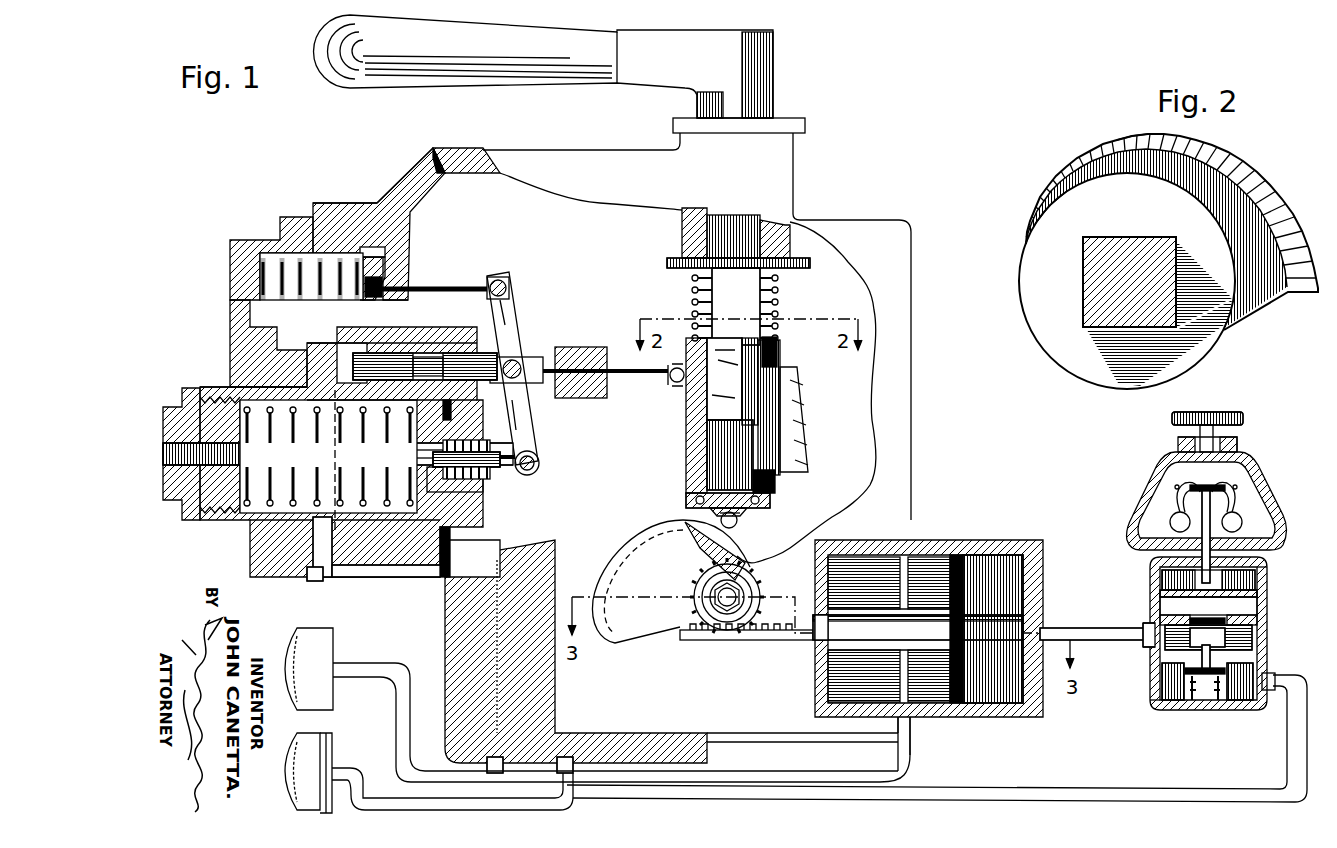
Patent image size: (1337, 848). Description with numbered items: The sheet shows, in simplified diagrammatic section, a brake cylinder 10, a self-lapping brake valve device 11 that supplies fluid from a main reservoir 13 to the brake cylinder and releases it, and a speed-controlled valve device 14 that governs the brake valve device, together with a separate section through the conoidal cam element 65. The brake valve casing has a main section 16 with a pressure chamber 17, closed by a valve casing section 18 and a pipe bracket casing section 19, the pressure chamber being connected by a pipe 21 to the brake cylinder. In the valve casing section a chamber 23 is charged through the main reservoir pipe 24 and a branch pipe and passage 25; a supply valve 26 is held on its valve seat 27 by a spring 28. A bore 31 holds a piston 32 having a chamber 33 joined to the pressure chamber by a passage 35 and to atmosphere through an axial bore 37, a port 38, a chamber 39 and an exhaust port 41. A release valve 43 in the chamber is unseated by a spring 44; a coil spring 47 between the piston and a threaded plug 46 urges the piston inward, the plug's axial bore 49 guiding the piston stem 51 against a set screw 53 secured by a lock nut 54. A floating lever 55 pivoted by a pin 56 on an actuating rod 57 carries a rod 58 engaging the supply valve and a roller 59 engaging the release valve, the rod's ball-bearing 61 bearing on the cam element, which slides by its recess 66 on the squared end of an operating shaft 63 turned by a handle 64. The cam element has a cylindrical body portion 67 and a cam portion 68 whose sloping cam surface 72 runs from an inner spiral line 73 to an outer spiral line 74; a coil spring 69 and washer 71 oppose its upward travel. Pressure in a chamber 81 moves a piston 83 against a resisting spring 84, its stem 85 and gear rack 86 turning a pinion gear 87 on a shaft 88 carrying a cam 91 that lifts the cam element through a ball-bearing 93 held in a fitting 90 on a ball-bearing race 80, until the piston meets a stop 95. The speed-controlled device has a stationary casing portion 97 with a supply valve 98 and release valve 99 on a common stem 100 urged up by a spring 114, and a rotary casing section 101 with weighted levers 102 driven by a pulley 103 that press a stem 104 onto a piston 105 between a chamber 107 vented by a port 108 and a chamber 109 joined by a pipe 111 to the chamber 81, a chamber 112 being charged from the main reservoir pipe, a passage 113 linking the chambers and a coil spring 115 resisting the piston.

In FIG. 1, the brake cylinder 10 is at (335, 742).
In FIG. 1, the self-lapping brake valve device 11 is at (318, 198).
In FIG. 1, the main reservoir 13 is at (336, 694).
In FIG. 1, the speed-controlled valve device 14 is at (1150, 468).
In FIG. 1, the main casing section 16 is at (465, 155).
In FIG. 1, the pressure chamber 17 is at (442, 188).
In FIG. 1, the valve casing section 18 is at (392, 193).
In FIG. 1, the pipe bracket casing section 19 is at (455, 748).
In FIG. 1, the pipe 21 is at (575, 802).
In FIG. 1, the chamber 23 is at (392, 258).
In FIG. 1, the main reservoir pipe 24 is at (373, 668).
In FIG. 1, the branch pipe and passage 25 is at (355, 567).
In FIG. 1, the supply valve 26 is at (398, 315).
In FIG. 1, the valve seat 27 is at (395, 298).
In FIG. 1, the spring 28 is at (262, 278).
In FIG. 1, the bore 31 is at (372, 522).
In FIG. 1, the piston 32 is at (455, 415).
In FIG. 1, the chamber 33 is at (445, 490).
In FIG. 1, the port or passage 35 is at (462, 432).
In FIG. 1, the axial bore 37 is at (447, 469).
In FIG. 1, the port 38 is at (392, 371).
In FIG. 1, the chamber 39 is at (276, 405).
In FIG. 1, the exhaust port or passage 41 is at (309, 575).
In FIG. 1, the release valve 43 is at (508, 462).
In FIG. 1, the spring 44 is at (487, 472).
In FIG. 1, the threaded plug 46 is at (222, 500).
In FIG. 1, the coil spring 47 is at (268, 505).
In FIG. 1, the axial bore 49 is at (233, 395).
In FIG. 1, the stem 51 is at (290, 505).
In FIG. 1, the set screw 53 is at (178, 405).
In FIG. 1, the lock nut 54 is at (185, 507).
In FIG. 1, the floating lever 55 is at (520, 318).
In FIG. 1, the pin 56 is at (522, 360).
In FIG. 1, the actuating rod or stem 57 is at (482, 353).
In FIG. 1, the rod or stem 58 is at (427, 285).
In FIG. 1, the roller 59 is at (539, 455).
In FIG. 1, the ball-bearing 61 is at (670, 384).
In FIG. 1, the operating shaft 63 is at (705, 120).
In FIG. 2, the operating shaft 63 is at (1086, 322).
In FIG. 1, the operating handle 64 is at (352, 62).
In FIG. 1, the conoidal cam element 65 is at (778, 355).
In FIG. 2, the conoidal cam element 65 is at (1012, 290).
In FIG. 1, the recess 66 is at (705, 460).
In FIG. 1, the cylindrical body portion 67 is at (690, 437).
In FIG. 1, the cam portion 68 is at (790, 472).
In FIG. 1, the coil spring 69 is at (778, 291).
In FIG. 1, the washer 71 is at (810, 265).
In FIG. 1, the sloping cam surface 72 is at (800, 420).
In FIG. 2, the sloping cam surface 72 is at (1252, 180).
In FIG. 2, the upper inner spiral line 73 is at (1085, 163).
In FIG. 2, the lower outer spiral line 74 is at (1122, 142).
In FIG. 1, the ball-bearing race 80 is at (690, 503).
In FIG. 1, the chamber 81 is at (1000, 557).
In FIG. 1, the piston 83 is at (958, 557).
In FIG. 1, the resisting spring 84 is at (928, 557).
In FIG. 1, the stem 85 is at (818, 634).
In FIG. 1, the gear rack 86 is at (745, 638).
In FIG. 1, the pinion gear 87 is at (752, 592).
In FIG. 1, the shaft 88 is at (683, 634).
In FIG. 1, the fitting 90 is at (745, 515).
In FIG. 1, the cam 91 is at (630, 632).
In FIG. 1, the ball-bearing 93 is at (740, 524).
In FIG. 1, the stop 95 is at (903, 705).
In FIG. 1, the stationary casing portion 97 is at (1162, 680).
In FIG. 1, the supply valve 98 is at (1235, 703).
In FIG. 1, the release valve 99 is at (1185, 612).
In FIG. 1, the common stem 100 is at (1180, 655).
In FIG. 1, the rotary casing section 101 is at (1248, 472).
In FIG. 1, the weighted levers 102 is at (1172, 490).
In FIG. 1, the pulley 103 is at (1207, 414).
In FIG. 1, the rod or stem 104 is at (1200, 553).
In FIG. 1, the piston 105 is at (1258, 592).
In FIG. 1, the chamber 107 is at (1165, 576).
In FIG. 1, the port 108 is at (1265, 572).
In FIG. 1, the chamber 109 is at (1258, 650).
In FIG. 1, the pipe 111 is at (1104, 638).
In FIG. 1, the chamber 112 is at (1155, 698).
In FIG. 1, the passage 113 is at (1258, 607).
In FIG. 1, the spring 114 is at (1192, 703).
In FIG. 1, the coil spring 115 is at (1258, 632).